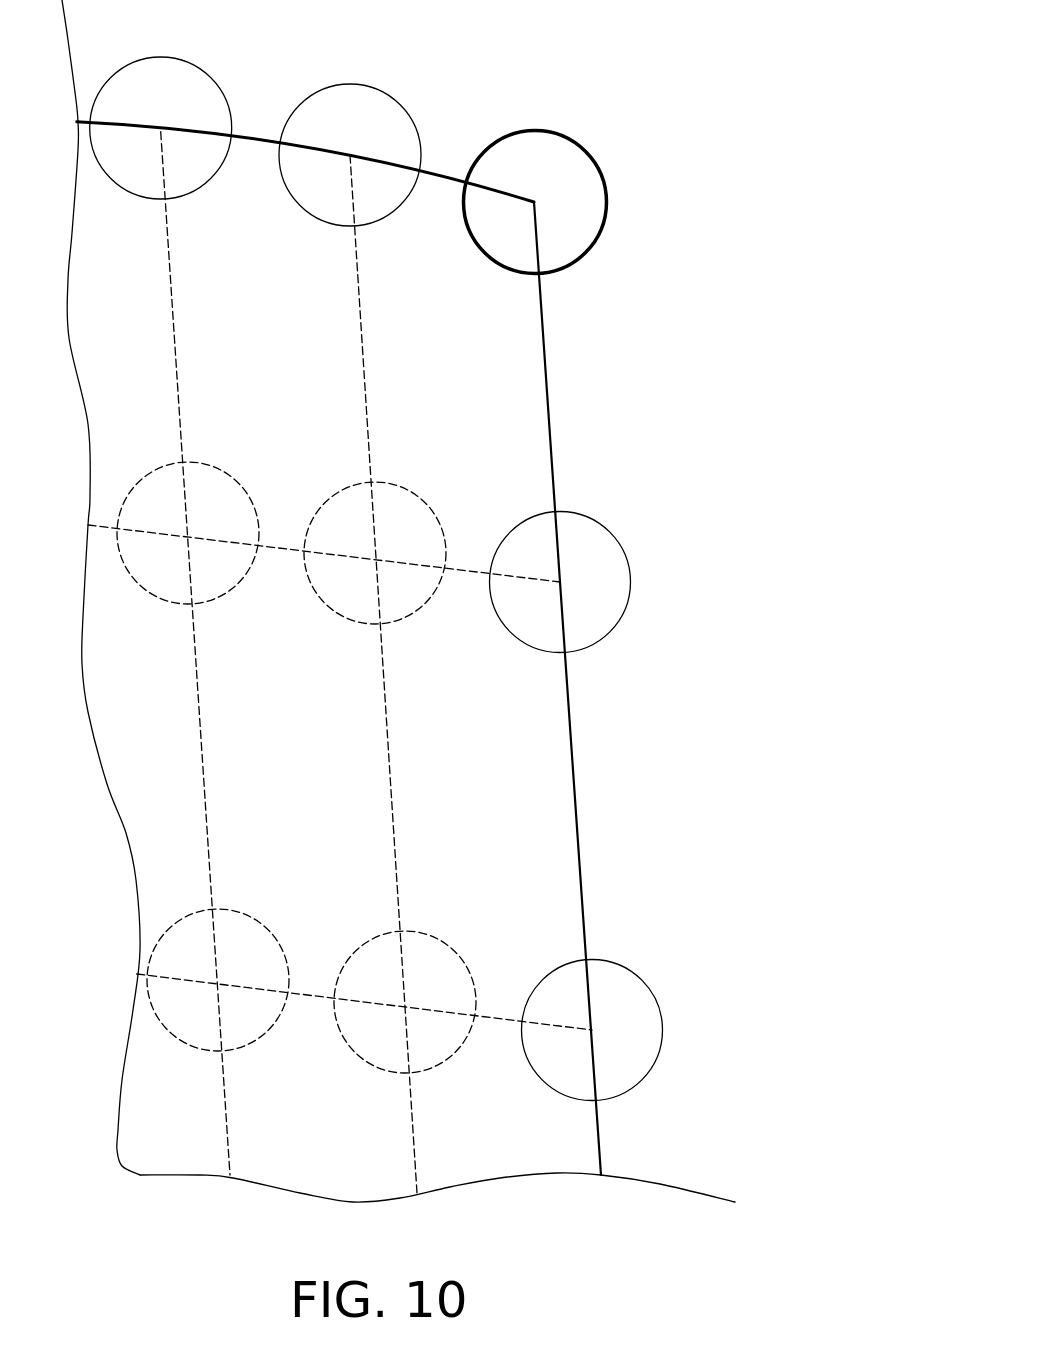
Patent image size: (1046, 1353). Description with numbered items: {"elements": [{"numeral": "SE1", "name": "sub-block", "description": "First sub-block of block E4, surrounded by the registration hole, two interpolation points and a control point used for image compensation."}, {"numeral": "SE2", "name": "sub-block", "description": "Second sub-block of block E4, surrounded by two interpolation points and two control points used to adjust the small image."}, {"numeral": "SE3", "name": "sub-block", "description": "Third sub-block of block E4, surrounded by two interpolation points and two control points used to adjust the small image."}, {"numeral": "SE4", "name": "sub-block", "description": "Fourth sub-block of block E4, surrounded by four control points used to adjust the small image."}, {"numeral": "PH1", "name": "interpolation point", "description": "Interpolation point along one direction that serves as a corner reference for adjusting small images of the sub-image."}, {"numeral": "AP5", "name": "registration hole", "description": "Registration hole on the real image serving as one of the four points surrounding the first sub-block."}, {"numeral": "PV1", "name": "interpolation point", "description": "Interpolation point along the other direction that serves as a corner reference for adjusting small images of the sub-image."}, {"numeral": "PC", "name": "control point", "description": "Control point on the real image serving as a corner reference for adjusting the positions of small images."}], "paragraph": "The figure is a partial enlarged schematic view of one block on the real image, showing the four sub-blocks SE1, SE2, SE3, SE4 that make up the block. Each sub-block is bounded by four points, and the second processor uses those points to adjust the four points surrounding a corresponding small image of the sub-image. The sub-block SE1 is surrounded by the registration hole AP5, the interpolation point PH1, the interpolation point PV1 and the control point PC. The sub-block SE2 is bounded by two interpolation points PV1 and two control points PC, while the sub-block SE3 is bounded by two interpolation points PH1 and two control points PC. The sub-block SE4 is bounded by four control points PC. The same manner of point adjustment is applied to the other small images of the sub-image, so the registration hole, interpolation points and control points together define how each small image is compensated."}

The first side edge SE1 is at (473, 362).
The second side edge SE2 is at (523, 755).
The third side edge SE3 is at (252, 293).
The fourth side edge SE4 is at (313, 863).
The first pixel hole PH1 is at (405, 107).
The fifth aperture AP5 is at (585, 147).
The first pixel via PV1 is at (632, 582).
The pixel circle PC is at (425, 607).